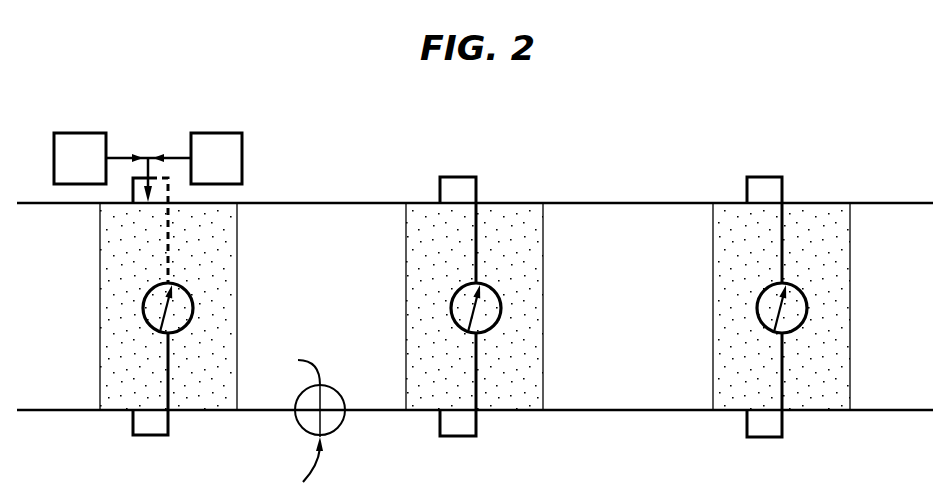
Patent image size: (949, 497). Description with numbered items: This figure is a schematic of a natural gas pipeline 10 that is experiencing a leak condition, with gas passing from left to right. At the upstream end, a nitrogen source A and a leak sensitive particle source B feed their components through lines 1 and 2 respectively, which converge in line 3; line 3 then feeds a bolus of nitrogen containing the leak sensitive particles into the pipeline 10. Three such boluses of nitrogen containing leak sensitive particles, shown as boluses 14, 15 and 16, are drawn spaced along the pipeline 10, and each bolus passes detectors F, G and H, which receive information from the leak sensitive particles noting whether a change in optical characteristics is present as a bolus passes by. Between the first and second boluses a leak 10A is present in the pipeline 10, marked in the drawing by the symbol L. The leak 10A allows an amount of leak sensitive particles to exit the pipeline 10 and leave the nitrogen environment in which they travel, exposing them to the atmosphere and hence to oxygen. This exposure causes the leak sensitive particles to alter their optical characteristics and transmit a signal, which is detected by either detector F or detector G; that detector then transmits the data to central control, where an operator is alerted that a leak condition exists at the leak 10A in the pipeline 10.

The line 1 is at (137, 144).
The line 2 is at (159, 144).
The line 3 is at (158, 220).
The pipeline 10 is at (627, 203).
The leak 10A is at (343, 425).
The bolus of nitrogen containing leak sensitive particles 14 is at (153, 306).
The bolus of nitrogen containing leak sensitive particles 15 is at (460, 293).
The bolus of nitrogen containing leak sensitive particles 16 is at (768, 293).
The nitrogen source A is at (69, 158).
The leak sensitive particle source B is at (230, 158).
The detector F is at (159, 426).
The detector G is at (468, 426).
The detector H is at (774, 427).
The flow indicator L is at (305, 428).